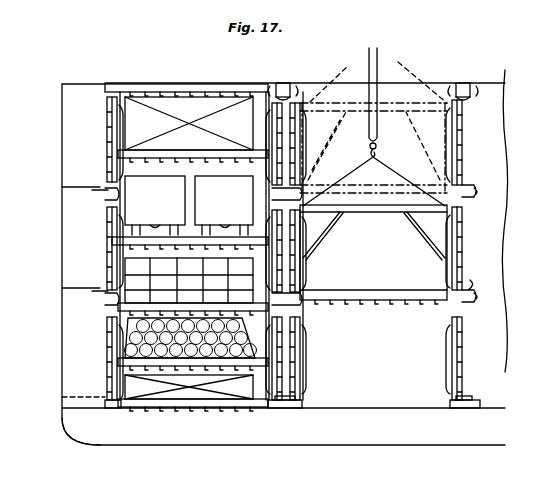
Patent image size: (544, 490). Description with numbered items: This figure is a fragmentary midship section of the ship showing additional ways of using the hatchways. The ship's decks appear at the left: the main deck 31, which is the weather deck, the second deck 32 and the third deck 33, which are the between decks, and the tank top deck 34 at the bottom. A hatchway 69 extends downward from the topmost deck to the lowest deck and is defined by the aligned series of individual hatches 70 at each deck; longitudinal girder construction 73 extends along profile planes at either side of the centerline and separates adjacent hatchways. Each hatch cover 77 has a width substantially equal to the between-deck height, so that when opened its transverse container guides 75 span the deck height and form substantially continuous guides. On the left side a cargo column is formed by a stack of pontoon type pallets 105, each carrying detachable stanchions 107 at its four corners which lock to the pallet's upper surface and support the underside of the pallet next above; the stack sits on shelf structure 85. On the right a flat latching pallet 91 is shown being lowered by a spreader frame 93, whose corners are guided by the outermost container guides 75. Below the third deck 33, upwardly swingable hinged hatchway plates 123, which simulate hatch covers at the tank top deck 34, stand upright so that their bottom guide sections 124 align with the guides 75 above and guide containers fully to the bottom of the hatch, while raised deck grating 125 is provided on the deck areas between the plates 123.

The main deck 31 is at (97, 84).
The second deck 32 is at (98, 188).
The third deck 33 is at (98, 290).
The tank top deck 34 is at (80, 416).
The hatchway 69 is at (498, 221).
The hatch 70 is at (475, 292).
The longitudinal girder construction 73 is at (283, 82).
The transverse container guides 75 is at (306, 162).
The hatch cover 77 is at (106, 129).
The shelf 85 is at (185, 84).
The pallet 91 is at (370, 290).
The spreader frame 93 is at (368, 220).
The pontoon type pallet 105 is at (180, 428).
The detachable stanchions 107 is at (125, 193).
The hinged hatchway plates 123 is at (302, 340).
The bottom guide sections 124 is at (304, 358).
The raised deck grating 125 is at (97, 397).